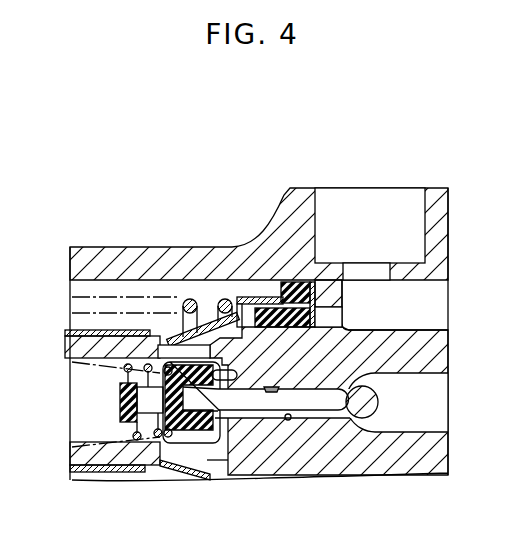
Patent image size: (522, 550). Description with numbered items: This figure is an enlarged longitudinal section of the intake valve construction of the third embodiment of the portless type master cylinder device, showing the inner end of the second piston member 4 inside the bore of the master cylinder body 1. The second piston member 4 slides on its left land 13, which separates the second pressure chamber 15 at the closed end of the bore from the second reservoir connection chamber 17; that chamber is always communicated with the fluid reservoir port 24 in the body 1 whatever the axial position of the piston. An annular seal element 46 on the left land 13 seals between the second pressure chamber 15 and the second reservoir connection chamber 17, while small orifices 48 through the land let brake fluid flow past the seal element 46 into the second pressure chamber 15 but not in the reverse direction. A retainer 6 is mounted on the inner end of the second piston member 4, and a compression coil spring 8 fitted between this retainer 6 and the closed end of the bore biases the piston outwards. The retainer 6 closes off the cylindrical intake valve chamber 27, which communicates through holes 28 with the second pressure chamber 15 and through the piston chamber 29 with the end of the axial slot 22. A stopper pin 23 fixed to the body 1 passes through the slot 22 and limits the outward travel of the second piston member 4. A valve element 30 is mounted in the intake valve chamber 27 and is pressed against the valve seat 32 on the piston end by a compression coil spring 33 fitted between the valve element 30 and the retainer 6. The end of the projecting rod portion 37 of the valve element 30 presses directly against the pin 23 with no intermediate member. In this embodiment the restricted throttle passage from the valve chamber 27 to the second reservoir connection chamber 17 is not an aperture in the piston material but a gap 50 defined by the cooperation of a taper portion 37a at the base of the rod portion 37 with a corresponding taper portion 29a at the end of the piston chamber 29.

The master cylinder body 1 is at (112, 252).
The second piston member 4 is at (378, 456).
The retainer 6 is at (252, 297).
The compression coil spring 8 is at (192, 298).
The left land 13 is at (337, 317).
The second pressure chamber 15 is at (138, 287).
The second reservoir connection chamber 17 is at (430, 323).
The slot 22 is at (413, 417).
The stopper pin 23 is at (376, 389).
The fluid reservoir port 24 is at (377, 277).
The intake valve chamber 27 is at (90, 407).
The holes 28 is at (232, 353).
The piston chamber 29 is at (288, 421).
The taper portion 29a is at (278, 389).
The valve element 30 is at (187, 430).
The valve seat 32 is at (236, 383).
The compression coil spring 33 is at (138, 440).
The projecting rod portion 37 is at (317, 403).
The taper portion 37a is at (243, 418).
The annular seal element 46 is at (280, 323).
The small orifices 48 is at (327, 302).
The gap 50 is at (253, 418).